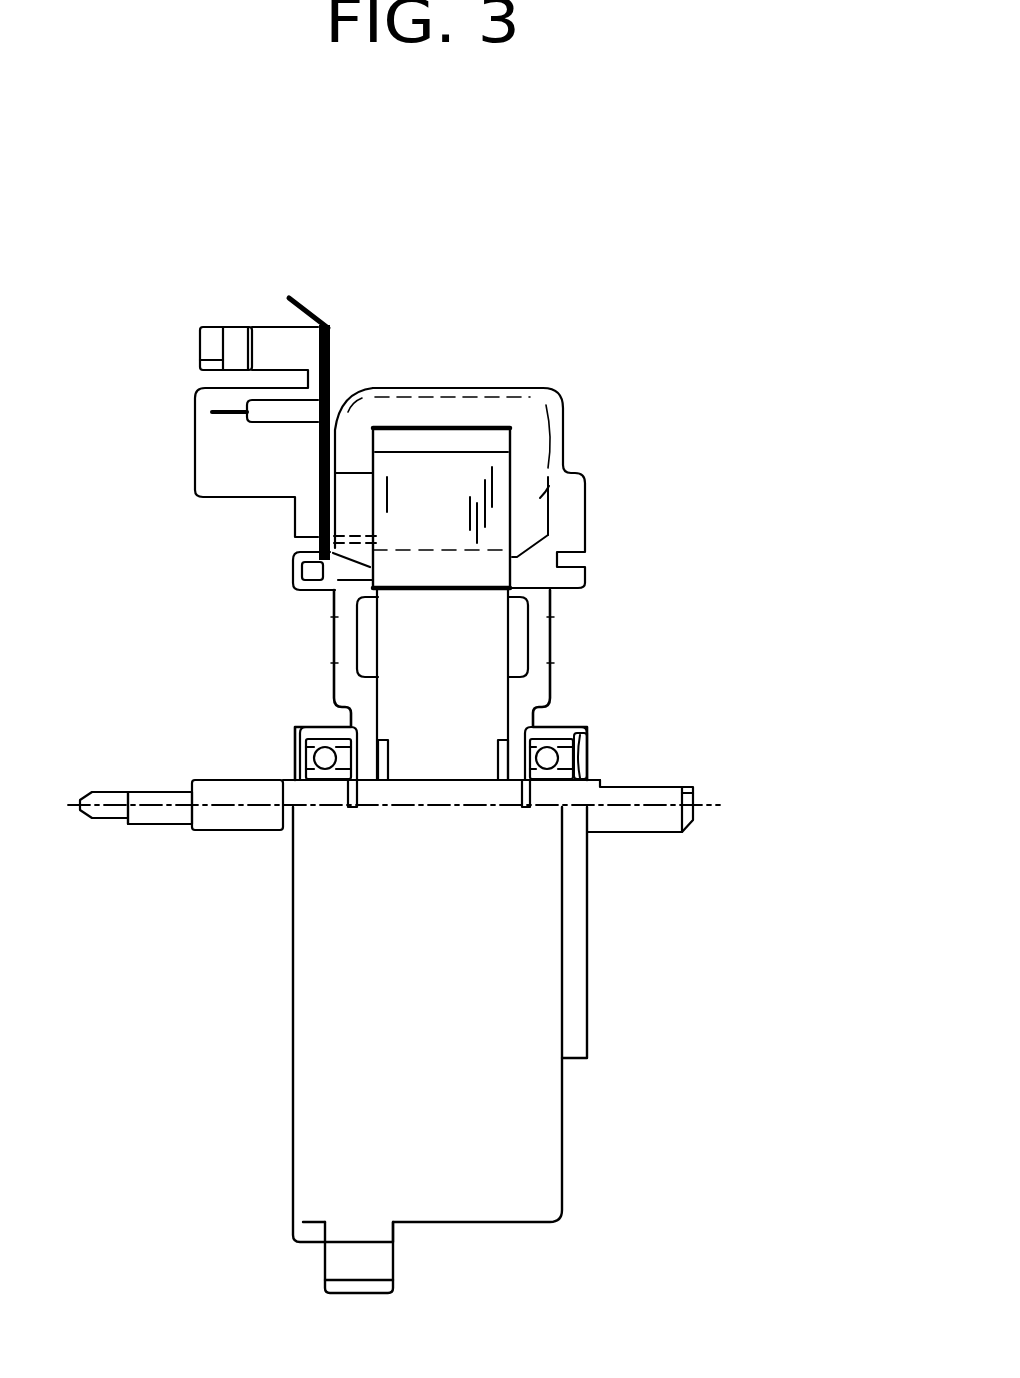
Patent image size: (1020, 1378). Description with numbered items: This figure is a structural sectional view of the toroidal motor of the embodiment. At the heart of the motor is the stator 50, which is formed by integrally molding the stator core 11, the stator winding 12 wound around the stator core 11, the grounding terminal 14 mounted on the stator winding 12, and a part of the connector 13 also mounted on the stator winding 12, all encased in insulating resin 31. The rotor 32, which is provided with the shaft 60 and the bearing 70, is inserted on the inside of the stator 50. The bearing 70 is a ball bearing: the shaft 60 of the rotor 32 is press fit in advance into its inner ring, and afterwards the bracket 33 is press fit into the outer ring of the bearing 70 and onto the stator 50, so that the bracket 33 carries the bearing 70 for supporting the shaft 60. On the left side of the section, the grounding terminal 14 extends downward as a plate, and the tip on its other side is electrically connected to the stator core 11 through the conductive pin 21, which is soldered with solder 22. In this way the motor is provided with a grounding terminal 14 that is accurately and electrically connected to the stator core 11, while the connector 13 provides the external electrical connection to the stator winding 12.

The stator core 11 is at (448, 467).
The stator winding 12 is at (539, 432).
The connector 13 is at (247, 327).
The grounding terminal 14 is at (314, 312).
The conductive pin 21 is at (345, 554).
The solder 22 is at (330, 544).
The insulating resin 31 is at (580, 508).
The rotor 32 is at (447, 627).
The bracket 33 is at (584, 741).
The stator 50 is at (423, 493).
The shaft 60 is at (646, 818).
The bearing 70 is at (549, 759).